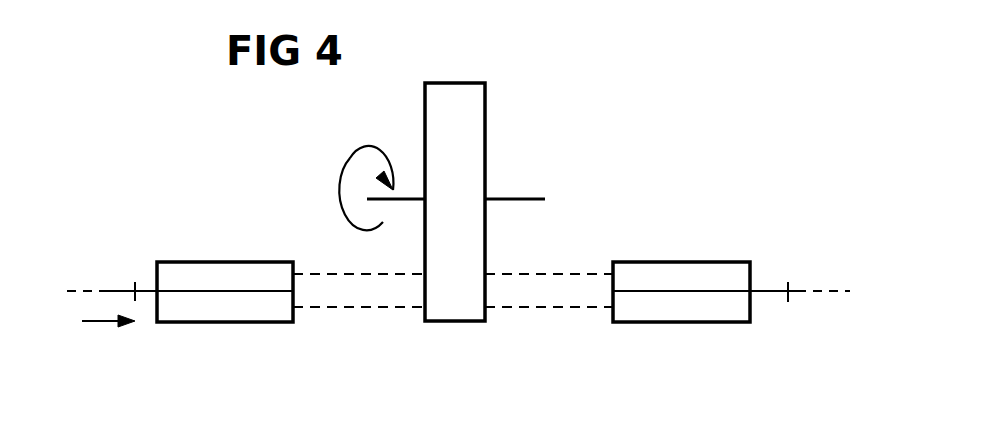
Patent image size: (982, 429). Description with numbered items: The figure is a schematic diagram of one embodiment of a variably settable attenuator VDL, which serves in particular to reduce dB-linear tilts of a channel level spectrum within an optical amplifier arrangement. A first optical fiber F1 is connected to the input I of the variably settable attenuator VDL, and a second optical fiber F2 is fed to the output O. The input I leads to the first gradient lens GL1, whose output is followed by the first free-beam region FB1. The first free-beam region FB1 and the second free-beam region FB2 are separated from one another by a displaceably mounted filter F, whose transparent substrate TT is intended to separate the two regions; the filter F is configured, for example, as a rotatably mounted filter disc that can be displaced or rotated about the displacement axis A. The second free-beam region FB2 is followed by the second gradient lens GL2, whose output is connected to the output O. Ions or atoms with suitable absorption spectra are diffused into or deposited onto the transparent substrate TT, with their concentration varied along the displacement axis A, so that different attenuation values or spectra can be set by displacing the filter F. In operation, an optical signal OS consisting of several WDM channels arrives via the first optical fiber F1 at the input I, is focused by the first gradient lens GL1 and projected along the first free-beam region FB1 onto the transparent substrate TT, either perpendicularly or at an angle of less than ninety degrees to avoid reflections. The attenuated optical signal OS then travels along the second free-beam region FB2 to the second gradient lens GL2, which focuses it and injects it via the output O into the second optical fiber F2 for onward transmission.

The transparent substrate TT is at (448, 83).
The displaceably mounted filter F is at (503, 122).
The displacement axis A is at (530, 198).
The first gradient lens GL1 is at (236, 261).
The second gradient lens GL2 is at (672, 261).
The first free-beam region FB1 is at (368, 308).
The second free-beam region FB2 is at (533, 308).
The first optical fiber F1 is at (118, 290).
The second optical fiber F2 is at (798, 290).
The input I is at (134, 273).
The output O is at (789, 275).
The optical signal OS is at (90, 323).
The variably settable attenuator VDL is at (768, 339).